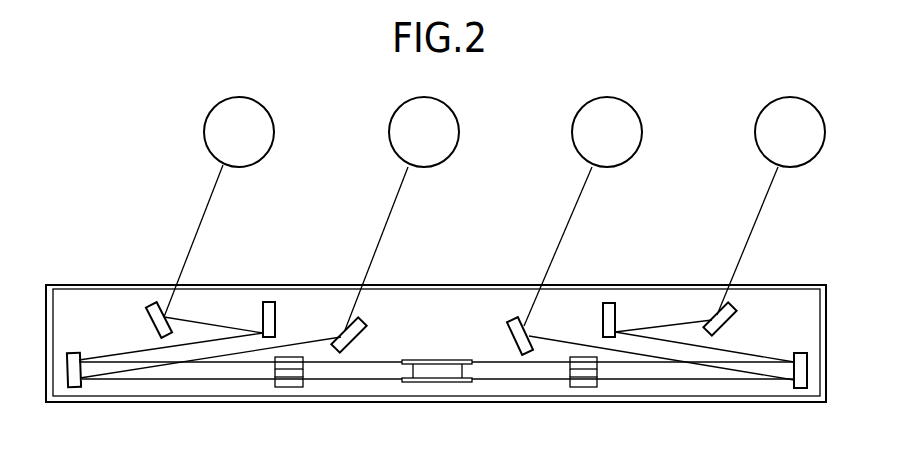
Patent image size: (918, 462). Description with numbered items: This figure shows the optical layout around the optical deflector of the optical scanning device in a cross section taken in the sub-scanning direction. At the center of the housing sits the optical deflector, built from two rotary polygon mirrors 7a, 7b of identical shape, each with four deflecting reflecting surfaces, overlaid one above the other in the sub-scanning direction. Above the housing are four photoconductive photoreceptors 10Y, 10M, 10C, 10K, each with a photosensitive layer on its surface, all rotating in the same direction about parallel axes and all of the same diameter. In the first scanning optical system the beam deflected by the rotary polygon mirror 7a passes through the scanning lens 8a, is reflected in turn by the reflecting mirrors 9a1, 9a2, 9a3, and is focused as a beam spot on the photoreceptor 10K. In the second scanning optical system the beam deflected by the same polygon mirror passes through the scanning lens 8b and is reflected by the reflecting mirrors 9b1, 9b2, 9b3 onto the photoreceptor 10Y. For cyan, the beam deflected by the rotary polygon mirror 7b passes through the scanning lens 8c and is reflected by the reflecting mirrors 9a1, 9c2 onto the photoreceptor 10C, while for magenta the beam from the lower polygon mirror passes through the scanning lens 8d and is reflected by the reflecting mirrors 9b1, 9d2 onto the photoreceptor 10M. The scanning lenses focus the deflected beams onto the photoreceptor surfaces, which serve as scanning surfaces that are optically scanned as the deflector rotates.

The photoreceptor 10Y is at (219, 207).
The photoreceptor 10M is at (402, 213).
The photoreceptor 10C is at (583, 211).
The photoreceptor 10K is at (771, 206).
The reflecting mirror 9b1 is at (72, 354).
The reflecting mirror 9b2 is at (268, 302).
The reflecting mirror 9b3 is at (153, 303).
The reflecting mirror 9d2 is at (363, 322).
The reflecting mirror 9c2 is at (513, 318).
The reflecting mirror 9a1 is at (800, 353).
The reflecting mirror 9a2 is at (609, 303).
The reflecting mirror 9a3 is at (740, 312).
The scanning lens 8a is at (582, 357).
The scanning lens 8b is at (293, 357).
The scanning lens 8c is at (582, 387).
The scanning lens 8d is at (290, 387).
The rotary polygon mirror 7a is at (436, 360).
The rotary polygon mirror 7b is at (433, 382).